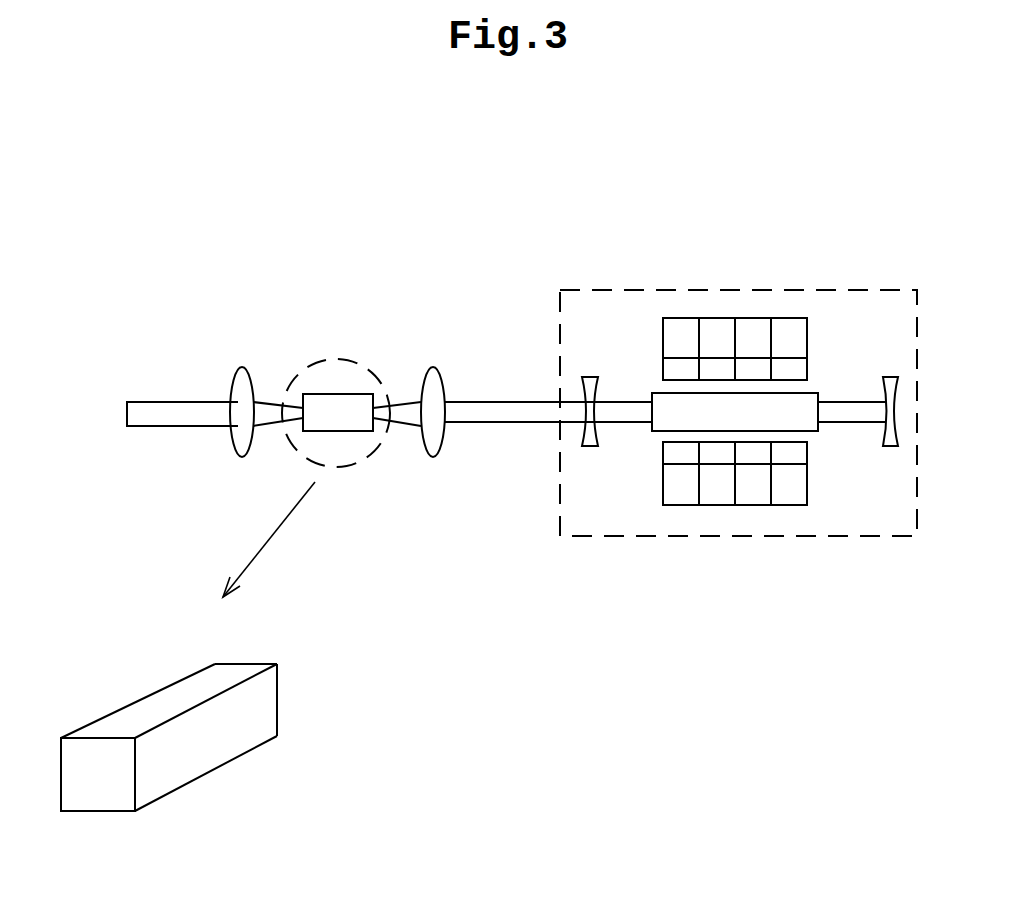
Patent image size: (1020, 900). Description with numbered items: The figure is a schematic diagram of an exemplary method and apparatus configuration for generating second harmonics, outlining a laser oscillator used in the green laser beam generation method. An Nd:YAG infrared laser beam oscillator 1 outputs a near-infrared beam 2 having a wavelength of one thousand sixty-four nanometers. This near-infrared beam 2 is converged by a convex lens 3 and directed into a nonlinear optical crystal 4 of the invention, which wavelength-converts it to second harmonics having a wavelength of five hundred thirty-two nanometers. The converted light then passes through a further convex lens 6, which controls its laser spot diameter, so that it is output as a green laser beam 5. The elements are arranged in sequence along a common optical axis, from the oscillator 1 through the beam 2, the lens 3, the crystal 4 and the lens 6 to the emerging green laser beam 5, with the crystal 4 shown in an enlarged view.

The Nd:YAG infrared laser beam oscillator 1 is at (741, 289).
The near-infrared beam 2 is at (520, 401).
The convex lens 3 is at (433, 367).
The nonlinear optical crystal 4 is at (220, 733).
The green laser beam 5 is at (187, 401).
The convex lens 6 is at (242, 367).